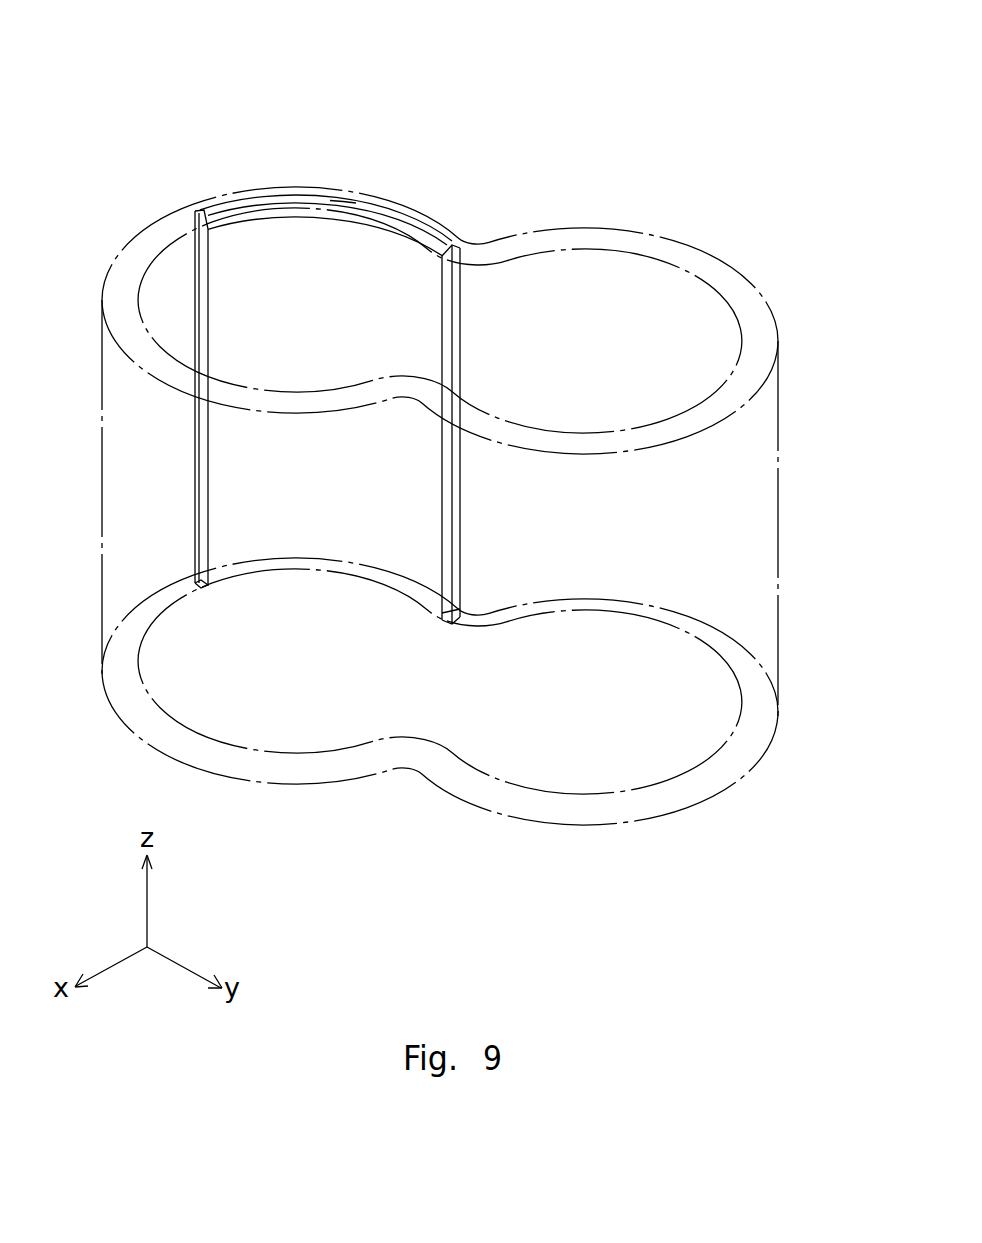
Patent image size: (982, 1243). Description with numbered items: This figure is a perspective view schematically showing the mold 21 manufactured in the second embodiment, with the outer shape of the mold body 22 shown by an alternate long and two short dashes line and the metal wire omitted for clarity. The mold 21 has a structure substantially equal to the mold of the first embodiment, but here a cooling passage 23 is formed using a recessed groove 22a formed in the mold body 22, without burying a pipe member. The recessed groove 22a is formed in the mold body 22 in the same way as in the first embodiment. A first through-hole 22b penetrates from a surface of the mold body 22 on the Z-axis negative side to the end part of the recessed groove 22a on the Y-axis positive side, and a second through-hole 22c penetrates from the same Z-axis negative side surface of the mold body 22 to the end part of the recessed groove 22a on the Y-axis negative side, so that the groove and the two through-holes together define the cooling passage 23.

The mold 21 is at (616, 117).
The mold body 22 is at (791, 592).
The recessed groove 22a is at (417, 233).
The first through-hole 22b is at (457, 370).
The second through-hole 22c is at (203, 308).
The cooling passage 23 is at (342, 207).